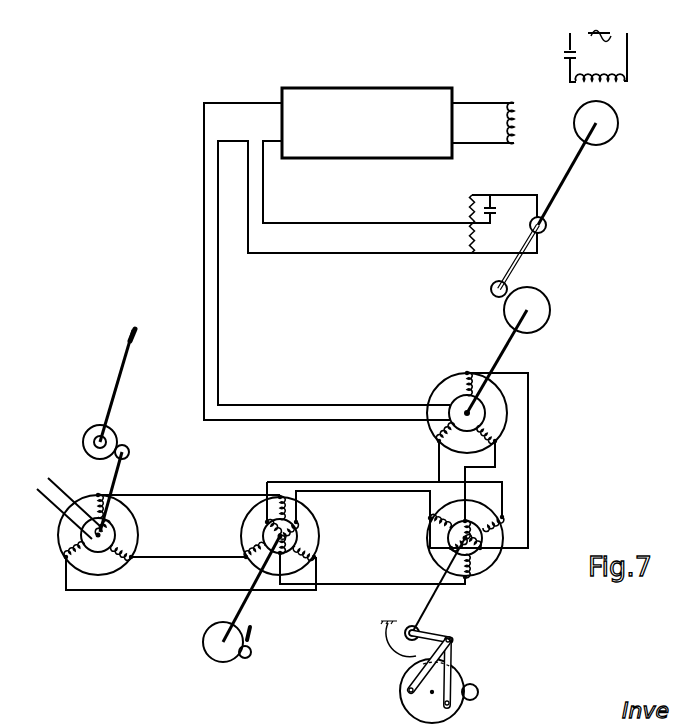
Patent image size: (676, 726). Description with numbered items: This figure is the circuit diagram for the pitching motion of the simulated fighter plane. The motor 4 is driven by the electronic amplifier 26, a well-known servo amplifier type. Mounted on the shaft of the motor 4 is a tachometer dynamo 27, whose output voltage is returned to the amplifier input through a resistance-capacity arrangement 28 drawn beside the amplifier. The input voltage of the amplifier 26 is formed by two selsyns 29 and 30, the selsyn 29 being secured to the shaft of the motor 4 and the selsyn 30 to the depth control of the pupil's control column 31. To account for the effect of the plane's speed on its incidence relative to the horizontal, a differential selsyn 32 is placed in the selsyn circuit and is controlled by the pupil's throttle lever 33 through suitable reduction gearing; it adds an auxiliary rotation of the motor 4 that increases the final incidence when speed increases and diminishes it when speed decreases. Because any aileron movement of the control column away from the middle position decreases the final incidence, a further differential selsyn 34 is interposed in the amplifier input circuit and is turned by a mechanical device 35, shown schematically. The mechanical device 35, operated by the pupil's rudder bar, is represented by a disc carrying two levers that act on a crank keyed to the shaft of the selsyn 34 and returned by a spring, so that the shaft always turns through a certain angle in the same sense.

The motor 4 is at (607, 138).
The electronic amplifier 26 is at (419, 87).
The tachometer dynamo 27 is at (548, 234).
The resistance-capacity arrangement 28 is at (494, 247).
The selsyn 29 is at (500, 410).
The selsyn 30 is at (134, 533).
The control column 31 is at (128, 341).
The differential selsyn 32 is at (300, 536).
The throttle lever 33 is at (256, 637).
The differential selsyn 34 is at (502, 535).
The mechanical device 35 is at (457, 668).